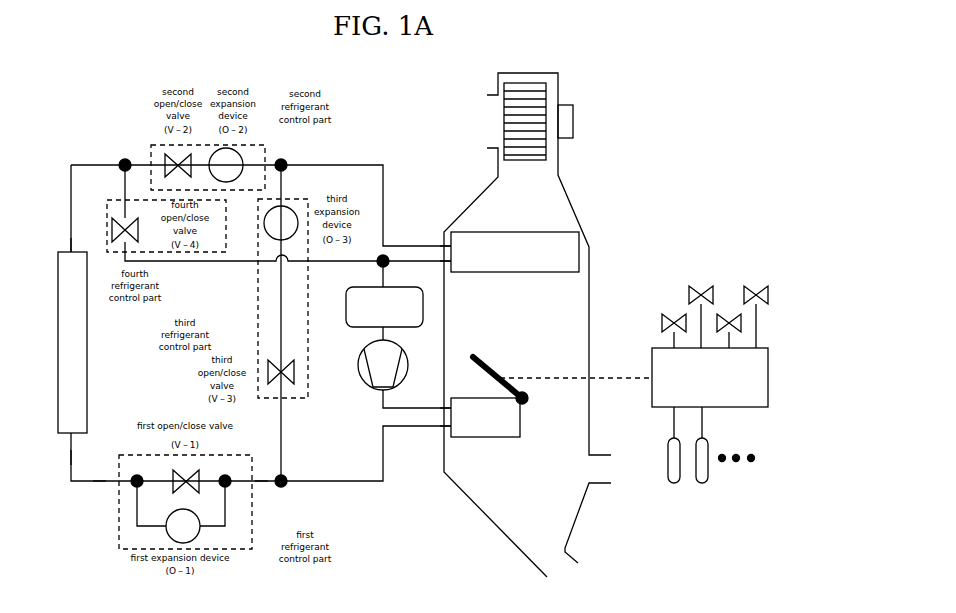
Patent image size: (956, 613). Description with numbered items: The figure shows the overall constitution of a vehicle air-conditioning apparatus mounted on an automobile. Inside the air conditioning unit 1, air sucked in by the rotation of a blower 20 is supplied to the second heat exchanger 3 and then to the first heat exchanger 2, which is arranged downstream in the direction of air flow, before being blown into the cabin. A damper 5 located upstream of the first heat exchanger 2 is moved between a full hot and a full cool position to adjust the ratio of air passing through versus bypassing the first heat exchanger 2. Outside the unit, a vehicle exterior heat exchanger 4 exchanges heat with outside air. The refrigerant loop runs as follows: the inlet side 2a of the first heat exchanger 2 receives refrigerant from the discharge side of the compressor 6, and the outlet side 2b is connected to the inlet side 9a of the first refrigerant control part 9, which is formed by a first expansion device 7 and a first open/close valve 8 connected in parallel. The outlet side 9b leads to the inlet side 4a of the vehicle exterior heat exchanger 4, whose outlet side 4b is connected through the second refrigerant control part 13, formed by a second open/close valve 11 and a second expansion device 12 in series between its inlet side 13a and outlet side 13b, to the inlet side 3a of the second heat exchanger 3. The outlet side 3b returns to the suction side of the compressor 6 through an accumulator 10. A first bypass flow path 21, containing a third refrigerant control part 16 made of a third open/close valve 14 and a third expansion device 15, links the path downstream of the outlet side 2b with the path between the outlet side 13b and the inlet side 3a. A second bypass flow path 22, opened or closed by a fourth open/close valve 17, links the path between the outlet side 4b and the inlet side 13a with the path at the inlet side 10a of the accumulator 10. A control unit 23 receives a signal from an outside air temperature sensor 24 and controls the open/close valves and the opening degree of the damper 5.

The air conditioning unit 1 is at (589, 331).
The first heat exchanger 2 is at (520, 421).
The inlet side of the first heat exchanger 2a is at (446, 408).
The outlet side of the first heat exchanger 2b is at (446, 434).
The second heat exchanger 3 is at (579, 258).
The inlet side of the second heat exchanger 3a is at (446, 245).
The outlet side of the second heat exchanger 3b is at (446, 269).
The vehicle exterior heat exchanger 4 is at (58, 414).
The inlet side of the vehicle exterior heat exchanger 4a is at (71, 458).
The outlet side of the vehicle exterior heat exchanger 4b is at (71, 246).
The damper 5 is at (478, 357).
The compressor 6 is at (408, 362).
The first expansion device 7 is at (198, 536).
The first open/close valve 8 is at (199, 478).
The first refrigerant control part 9 is at (402, 432).
The inlet side of the first refrigerant control part 9a is at (261, 480).
The outlet side of the first refrigerant control part 9b is at (98, 480).
The accumulator 10 is at (346, 314).
The inlet side of the accumulator 10a is at (380, 284).
The second open/close valve 11 is at (184, 174).
The second expansion device 12 is at (228, 177).
The second refrigerant control part 13 is at (432, 239).
The inlet side of the second refrigerant control part 13a is at (122, 162).
The outlet side of the second refrigerant control part 13b is at (285, 164).
The third open/close valve 14 is at (284, 357).
The third expansion device 15 is at (258, 238).
The third refrigerant control part 16 is at (478, 298).
The fourth open/close valve 17 is at (113, 248).
The blower 20 is at (522, 83).
The first bypass flow path 21 is at (285, 462).
The second bypass flow path 22 is at (431, 274).
The control unit 23 is at (768, 381).
The outside air temperature sensor 24 is at (676, 483).